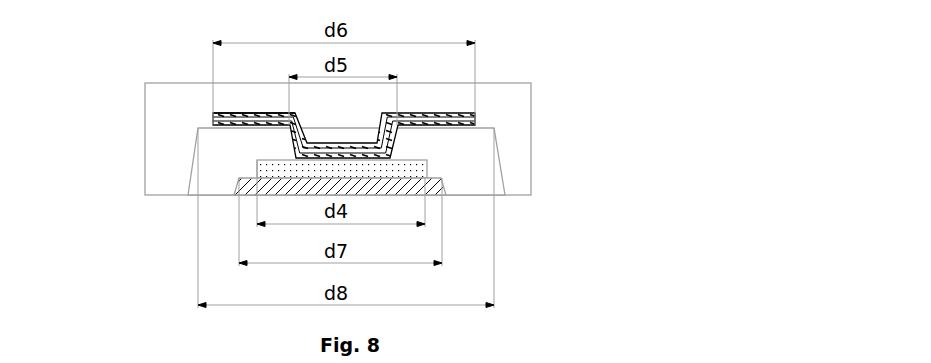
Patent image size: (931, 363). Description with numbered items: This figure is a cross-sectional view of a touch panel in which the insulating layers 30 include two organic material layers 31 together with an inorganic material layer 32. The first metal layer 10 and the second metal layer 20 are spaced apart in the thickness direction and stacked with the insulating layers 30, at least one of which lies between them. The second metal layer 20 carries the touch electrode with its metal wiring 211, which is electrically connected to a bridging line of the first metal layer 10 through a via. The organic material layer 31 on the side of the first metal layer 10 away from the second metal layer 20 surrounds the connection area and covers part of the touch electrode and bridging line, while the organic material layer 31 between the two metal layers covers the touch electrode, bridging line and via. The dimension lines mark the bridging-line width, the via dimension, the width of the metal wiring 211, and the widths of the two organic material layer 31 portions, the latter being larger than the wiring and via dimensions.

The first metal layer 10 is at (288, 165).
The second metal layer 20 is at (503, 114).
The metal wiring 211 is at (223, 112).
The insulating layer 30 is at (347, 138).
The organic material layer 31 is at (225, 143).
The inorganic material layer 32 is at (173, 103).